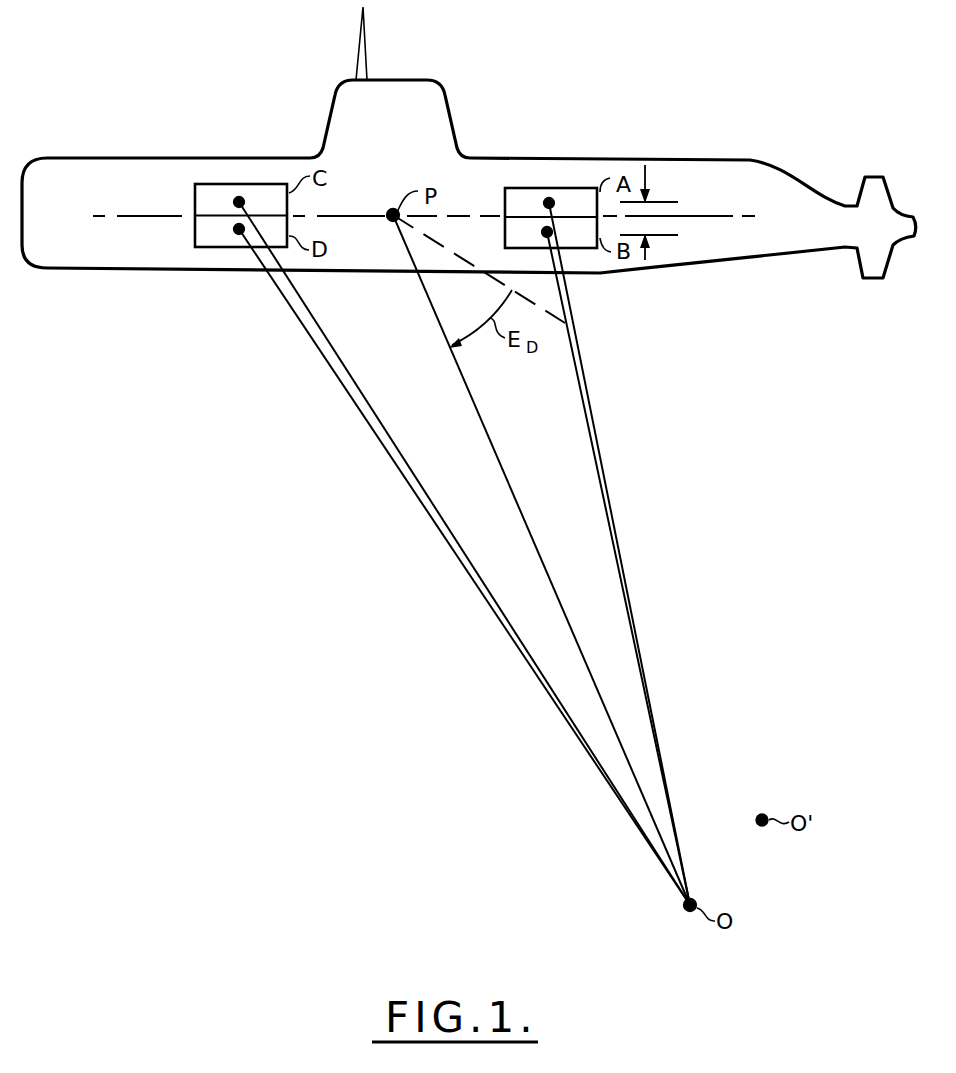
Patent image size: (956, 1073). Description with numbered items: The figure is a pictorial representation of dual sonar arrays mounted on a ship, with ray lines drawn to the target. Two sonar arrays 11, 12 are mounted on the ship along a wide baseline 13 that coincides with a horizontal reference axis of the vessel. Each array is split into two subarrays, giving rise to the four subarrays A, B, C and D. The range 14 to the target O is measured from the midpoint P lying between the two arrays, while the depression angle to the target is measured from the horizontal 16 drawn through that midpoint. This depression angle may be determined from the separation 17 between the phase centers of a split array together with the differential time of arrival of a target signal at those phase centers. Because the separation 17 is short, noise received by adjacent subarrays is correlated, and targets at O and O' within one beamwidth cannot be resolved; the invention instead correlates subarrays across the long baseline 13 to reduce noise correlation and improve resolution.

The sonar array 11 is at (181, 182).
The sonar array 12 is at (500, 182).
The wide baseline 13 is at (364, 213).
The range 14 is at (503, 467).
The horizontal 16 is at (452, 254).
The separation 17 is at (643, 215).